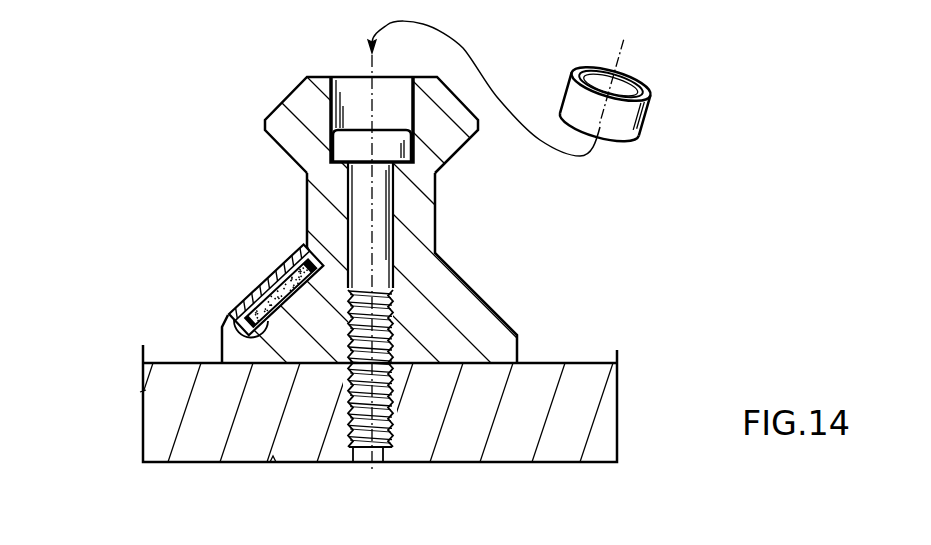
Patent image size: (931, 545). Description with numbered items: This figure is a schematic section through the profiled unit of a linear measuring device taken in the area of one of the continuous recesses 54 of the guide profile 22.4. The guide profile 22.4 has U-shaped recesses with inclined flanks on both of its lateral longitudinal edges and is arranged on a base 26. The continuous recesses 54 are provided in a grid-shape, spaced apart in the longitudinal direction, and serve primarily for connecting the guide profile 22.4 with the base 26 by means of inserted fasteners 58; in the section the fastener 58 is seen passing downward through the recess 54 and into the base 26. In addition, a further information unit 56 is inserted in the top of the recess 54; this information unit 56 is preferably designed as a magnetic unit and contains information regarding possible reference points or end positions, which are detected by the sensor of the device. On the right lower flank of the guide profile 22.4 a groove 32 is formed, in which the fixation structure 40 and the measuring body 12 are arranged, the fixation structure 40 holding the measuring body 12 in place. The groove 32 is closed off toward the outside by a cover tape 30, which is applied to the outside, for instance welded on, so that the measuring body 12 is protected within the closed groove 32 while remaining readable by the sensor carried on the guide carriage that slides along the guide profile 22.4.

The measuring body 12 is at (250, 292).
The guide profile 22.4 is at (421, 227).
The base 26 is at (595, 363).
The cover tape 30 is at (250, 287).
The groove 32 is at (306, 246).
The fixation structure 40 is at (223, 347).
The continuous recess 54 is at (342, 99).
The information unit 56 is at (649, 127).
The fastener 58 is at (347, 373).